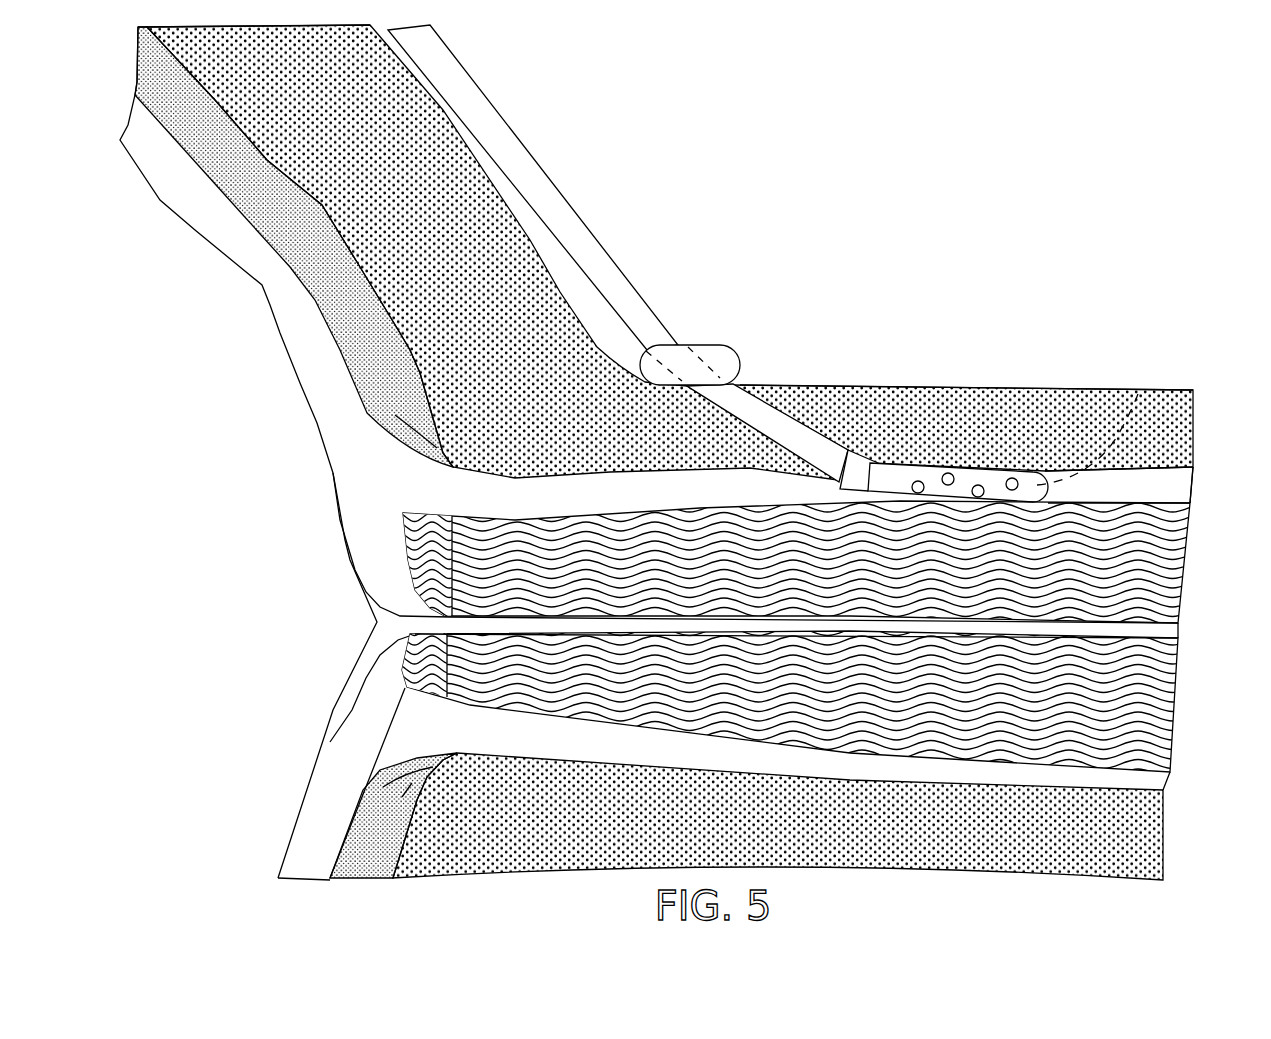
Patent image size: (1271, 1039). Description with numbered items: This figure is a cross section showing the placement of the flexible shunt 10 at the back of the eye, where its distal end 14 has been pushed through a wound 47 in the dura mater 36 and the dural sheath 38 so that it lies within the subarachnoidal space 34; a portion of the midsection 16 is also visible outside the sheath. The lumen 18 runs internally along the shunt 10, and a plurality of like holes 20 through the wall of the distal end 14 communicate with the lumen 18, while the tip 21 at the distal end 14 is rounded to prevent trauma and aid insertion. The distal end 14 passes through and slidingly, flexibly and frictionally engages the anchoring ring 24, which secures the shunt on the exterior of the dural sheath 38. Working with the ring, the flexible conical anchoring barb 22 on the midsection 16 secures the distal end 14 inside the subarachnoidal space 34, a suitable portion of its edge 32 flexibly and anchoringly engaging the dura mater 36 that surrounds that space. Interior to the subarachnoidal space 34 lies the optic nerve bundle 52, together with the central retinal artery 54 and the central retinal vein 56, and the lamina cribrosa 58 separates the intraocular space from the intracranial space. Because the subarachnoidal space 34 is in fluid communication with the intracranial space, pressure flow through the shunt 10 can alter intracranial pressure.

The shunt 10 is at (500, 132).
The distal end 14 is at (932, 477).
The midsection 16 is at (448, 75).
The lumen 18 is at (1139, 378).
The holes 20 is at (982, 493).
The tip 21 is at (1047, 475).
The anchoring barb 22 is at (870, 467).
The anchoring ring 24 is at (720, 347).
The edge 32 is at (846, 450).
The subarachnoidal space 34 is at (1150, 490).
The dura mater 36 is at (790, 412).
The dural sheath 38 is at (850, 393).
The wound 47 is at (767, 410).
The optic nerve bundle 52 is at (1168, 565).
The central retinal artery 54 is at (1178, 625).
The central retinal vein 56 is at (1178, 640).
The lamina cribrosa 58 is at (430, 570).